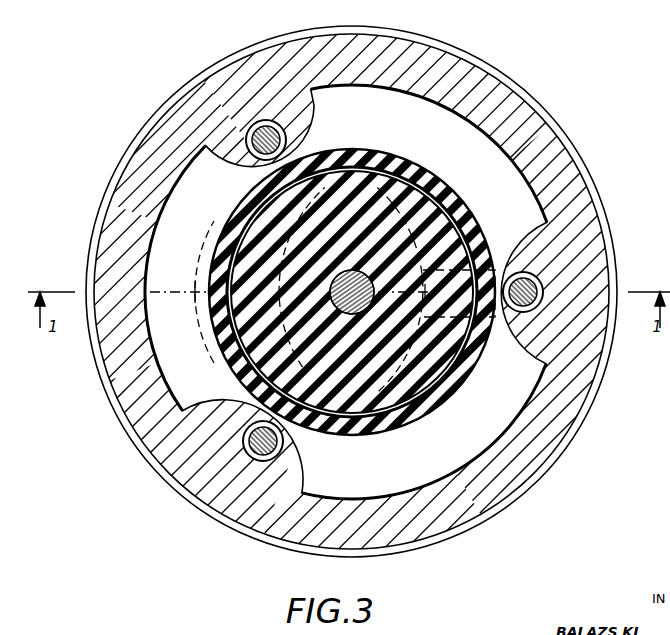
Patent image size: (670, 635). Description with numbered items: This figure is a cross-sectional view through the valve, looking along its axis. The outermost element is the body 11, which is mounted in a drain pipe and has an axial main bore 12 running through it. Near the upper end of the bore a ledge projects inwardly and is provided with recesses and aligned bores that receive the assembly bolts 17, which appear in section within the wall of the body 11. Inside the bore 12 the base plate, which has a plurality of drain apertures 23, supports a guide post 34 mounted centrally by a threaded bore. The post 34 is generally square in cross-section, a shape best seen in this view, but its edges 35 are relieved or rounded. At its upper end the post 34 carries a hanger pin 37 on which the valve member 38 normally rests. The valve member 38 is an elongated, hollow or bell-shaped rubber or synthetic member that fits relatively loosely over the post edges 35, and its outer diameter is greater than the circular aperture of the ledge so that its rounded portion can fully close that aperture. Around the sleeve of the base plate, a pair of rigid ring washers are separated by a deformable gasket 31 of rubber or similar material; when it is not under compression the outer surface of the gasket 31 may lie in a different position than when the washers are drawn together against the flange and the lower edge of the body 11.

The body 11 is at (584, 419).
The axial main bore 12 is at (168, 372).
The assembly bolts 17 is at (284, 132).
The drain apertures 23 is at (476, 157).
The deformable gasket 31 is at (605, 211).
The guide post 34 is at (440, 396).
The relieved or rounded edges 35 is at (364, 152).
The hanger pin 37 is at (352, 270).
The valve member 38 is at (400, 166).